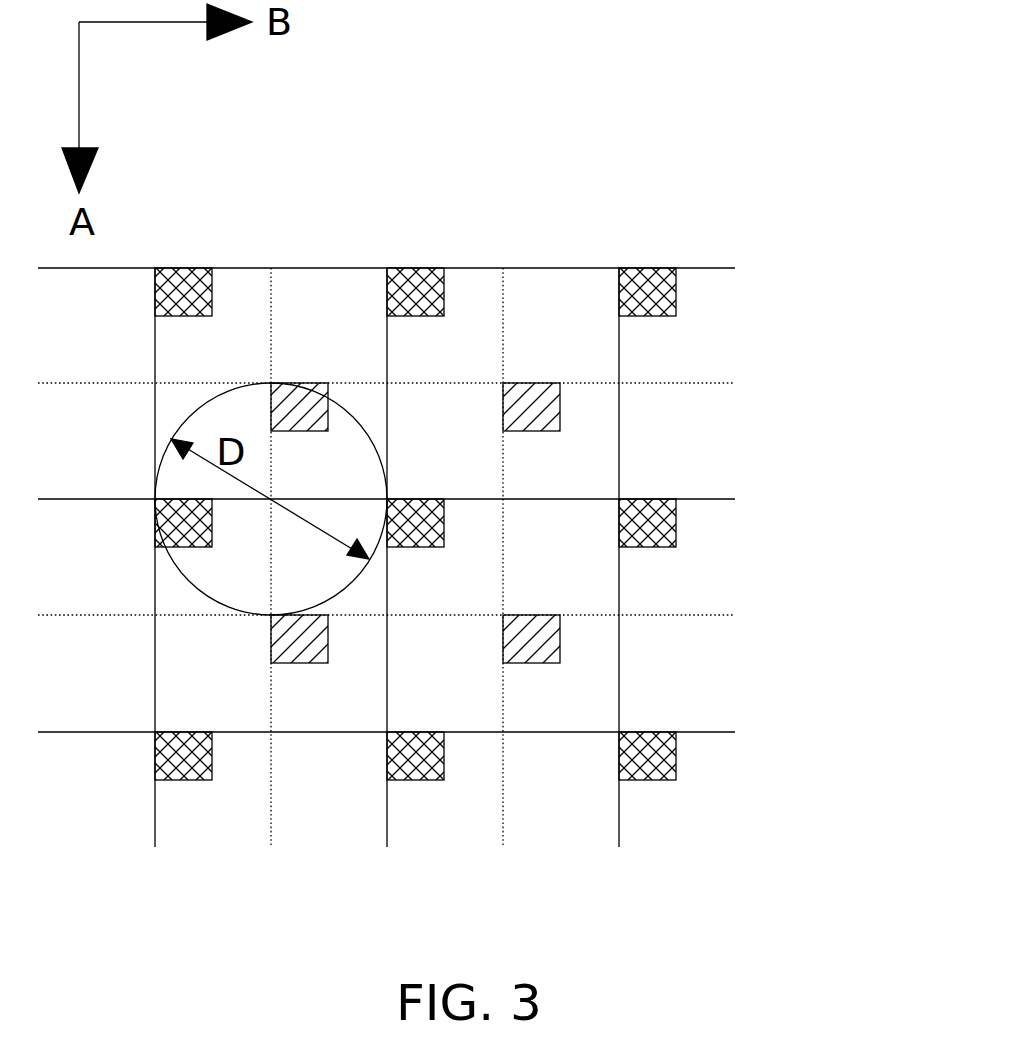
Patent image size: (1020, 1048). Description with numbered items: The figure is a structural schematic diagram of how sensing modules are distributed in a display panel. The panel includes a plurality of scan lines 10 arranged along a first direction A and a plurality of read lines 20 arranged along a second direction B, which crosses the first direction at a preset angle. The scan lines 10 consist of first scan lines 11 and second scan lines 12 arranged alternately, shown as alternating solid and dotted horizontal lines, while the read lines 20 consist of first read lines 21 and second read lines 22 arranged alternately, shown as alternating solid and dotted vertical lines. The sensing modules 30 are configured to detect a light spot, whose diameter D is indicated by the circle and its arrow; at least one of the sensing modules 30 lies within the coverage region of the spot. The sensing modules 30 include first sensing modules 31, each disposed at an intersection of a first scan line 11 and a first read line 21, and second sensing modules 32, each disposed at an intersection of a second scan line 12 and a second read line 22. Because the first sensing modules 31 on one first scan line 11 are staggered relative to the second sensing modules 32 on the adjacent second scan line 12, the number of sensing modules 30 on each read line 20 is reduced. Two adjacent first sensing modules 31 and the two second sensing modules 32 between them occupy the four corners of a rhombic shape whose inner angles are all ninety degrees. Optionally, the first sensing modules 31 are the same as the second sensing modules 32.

The scan lines 10 is at (471, 500).
The first scan lines 11 is at (720, 268).
The second scan lines 12 is at (720, 383).
The read lines 20 is at (387, 608).
The first read lines 21 is at (387, 828).
The second read lines 22 is at (271, 828).
The sensing modules 30 is at (531, 524).
The first sensing modules 31 is at (676, 545).
The second sensing modules 32 is at (560, 663).